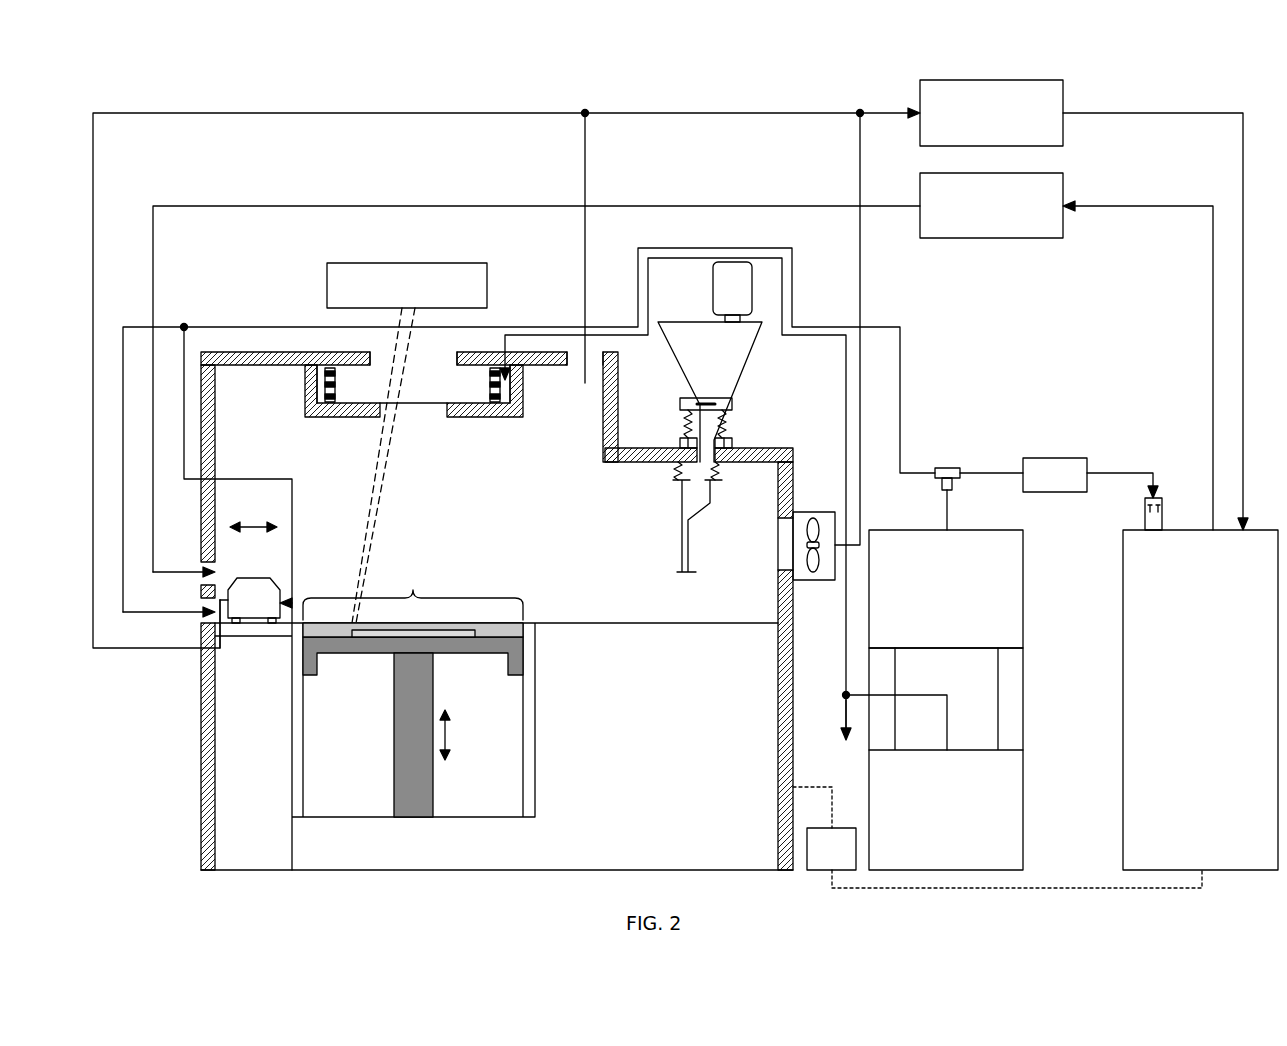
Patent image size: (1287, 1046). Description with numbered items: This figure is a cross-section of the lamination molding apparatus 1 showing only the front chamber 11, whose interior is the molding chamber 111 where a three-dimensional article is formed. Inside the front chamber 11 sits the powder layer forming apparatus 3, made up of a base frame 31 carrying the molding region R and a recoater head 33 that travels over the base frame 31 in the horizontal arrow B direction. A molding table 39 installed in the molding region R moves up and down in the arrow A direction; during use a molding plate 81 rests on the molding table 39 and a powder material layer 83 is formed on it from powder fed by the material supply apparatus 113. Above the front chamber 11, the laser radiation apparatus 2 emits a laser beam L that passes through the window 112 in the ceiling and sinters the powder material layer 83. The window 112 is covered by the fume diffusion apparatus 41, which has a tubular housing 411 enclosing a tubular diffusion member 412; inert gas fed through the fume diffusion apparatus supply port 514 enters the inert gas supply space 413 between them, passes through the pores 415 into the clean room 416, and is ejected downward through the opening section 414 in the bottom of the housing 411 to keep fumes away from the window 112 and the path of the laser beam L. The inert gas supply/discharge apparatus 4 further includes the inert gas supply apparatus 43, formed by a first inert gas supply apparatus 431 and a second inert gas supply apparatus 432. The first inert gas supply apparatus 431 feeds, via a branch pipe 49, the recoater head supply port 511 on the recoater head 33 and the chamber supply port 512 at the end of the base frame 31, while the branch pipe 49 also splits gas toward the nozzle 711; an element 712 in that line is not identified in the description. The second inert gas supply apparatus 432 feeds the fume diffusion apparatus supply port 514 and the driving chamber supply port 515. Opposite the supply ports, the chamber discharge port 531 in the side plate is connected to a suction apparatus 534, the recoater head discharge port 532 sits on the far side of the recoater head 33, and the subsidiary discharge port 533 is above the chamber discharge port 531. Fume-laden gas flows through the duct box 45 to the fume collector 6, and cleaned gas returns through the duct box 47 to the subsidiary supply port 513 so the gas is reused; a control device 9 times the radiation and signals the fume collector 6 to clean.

The lamination molding apparatus 1 is at (176, 190).
The laser radiation apparatus 2 is at (458, 272).
The powder layer forming apparatus 3 is at (481, 598).
The inert gas supply/discharge apparatus 4 is at (955, 181).
The fume collector 6 is at (1133, 568).
The control device 9 is at (845, 833).
The front chamber 11 is at (755, 455).
The molding chamber 111 is at (630, 508).
The window 112 is at (380, 355).
The material supply apparatus 113 is at (740, 345).
The base frame 31 is at (280, 630).
The recoater head 33 is at (252, 615).
The molding table 39 is at (330, 652).
The fume diffusion apparatus 41 is at (432, 428).
The housing 411 is at (345, 410).
The diffusion member 412 is at (490, 375).
The inert gas supply space 413 is at (508, 392).
The opening section 414 is at (430, 410).
The pores 415 is at (335, 378).
The clean room 416 is at (443, 399).
The inert gas supply apparatus 43 is at (985, 694).
The first inert gas supply apparatus 431 is at (1020, 640).
The second inert gas supply apparatus 432 is at (1015, 773).
The duct box 45 is at (1055, 128).
The duct box 47 is at (1047, 232).
The branch pipe 49 is at (955, 468).
The recoater head supply port 511 is at (283, 590).
The chamber supply port 512 is at (205, 620).
The subsidiary supply port 513 is at (200, 572).
The fume diffusion apparatus supply port 514 is at (502, 350).
The driving chamber supply port 515 is at (849, 731).
The chamber discharge port 531 is at (780, 560).
The recoater head discharge port 532 is at (228, 590).
The subsidiary discharge port 533 is at (575, 362).
The suction apparatus 534 is at (800, 580).
The nozzle 711 is at (1145, 520).
The regulator 712 is at (1070, 458).
The molding plate 81 is at (455, 640).
The powder material layer 83 is at (440, 628).
The laser beam L is at (370, 540).
The molding region R is at (413, 593).
The arrow A direction A is at (452, 735).
The arrow B direction B is at (253, 517).